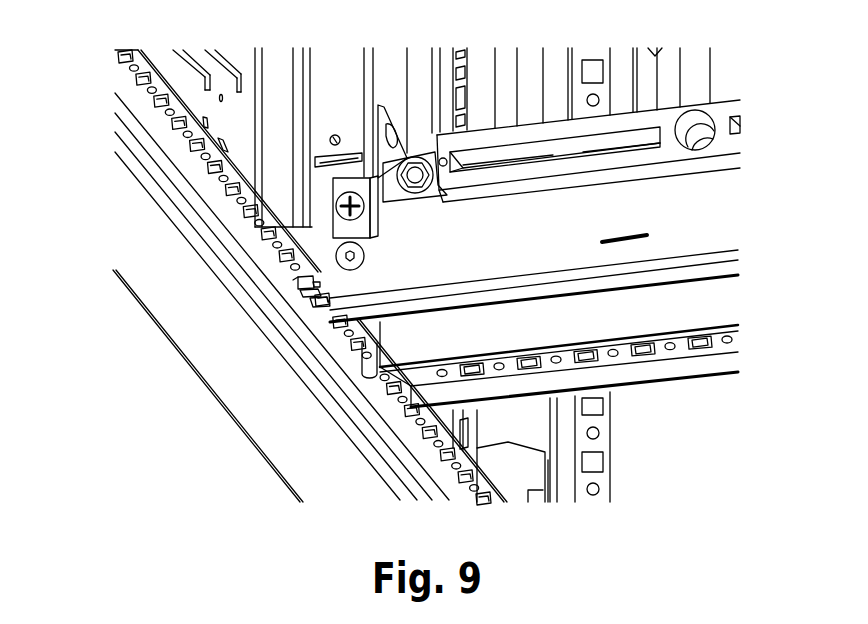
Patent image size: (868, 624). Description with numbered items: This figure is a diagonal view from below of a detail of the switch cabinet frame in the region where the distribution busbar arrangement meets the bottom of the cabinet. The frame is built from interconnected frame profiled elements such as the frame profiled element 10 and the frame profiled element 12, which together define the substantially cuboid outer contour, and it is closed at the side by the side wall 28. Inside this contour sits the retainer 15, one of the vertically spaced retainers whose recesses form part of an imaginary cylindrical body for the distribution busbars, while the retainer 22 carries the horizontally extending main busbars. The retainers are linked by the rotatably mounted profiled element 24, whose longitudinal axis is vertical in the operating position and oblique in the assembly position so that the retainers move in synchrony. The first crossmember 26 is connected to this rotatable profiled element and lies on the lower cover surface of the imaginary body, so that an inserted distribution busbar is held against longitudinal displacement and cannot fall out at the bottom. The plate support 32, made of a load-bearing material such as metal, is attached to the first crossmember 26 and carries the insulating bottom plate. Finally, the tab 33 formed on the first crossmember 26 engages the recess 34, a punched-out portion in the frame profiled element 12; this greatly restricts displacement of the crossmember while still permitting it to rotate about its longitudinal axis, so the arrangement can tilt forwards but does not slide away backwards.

The frame profiled element 10 is at (600, 55).
The frame profiled element 12 is at (130, 233).
The retainer 15 is at (715, 108).
The retainer 22 is at (535, 62).
The rotatably mounted profiled element 24 is at (340, 62).
The first crossmember 26 is at (722, 363).
The side wall 28 is at (167, 55).
The plate support 32 is at (722, 305).
The tab 33 is at (296, 296).
The recess 34 is at (286, 280).